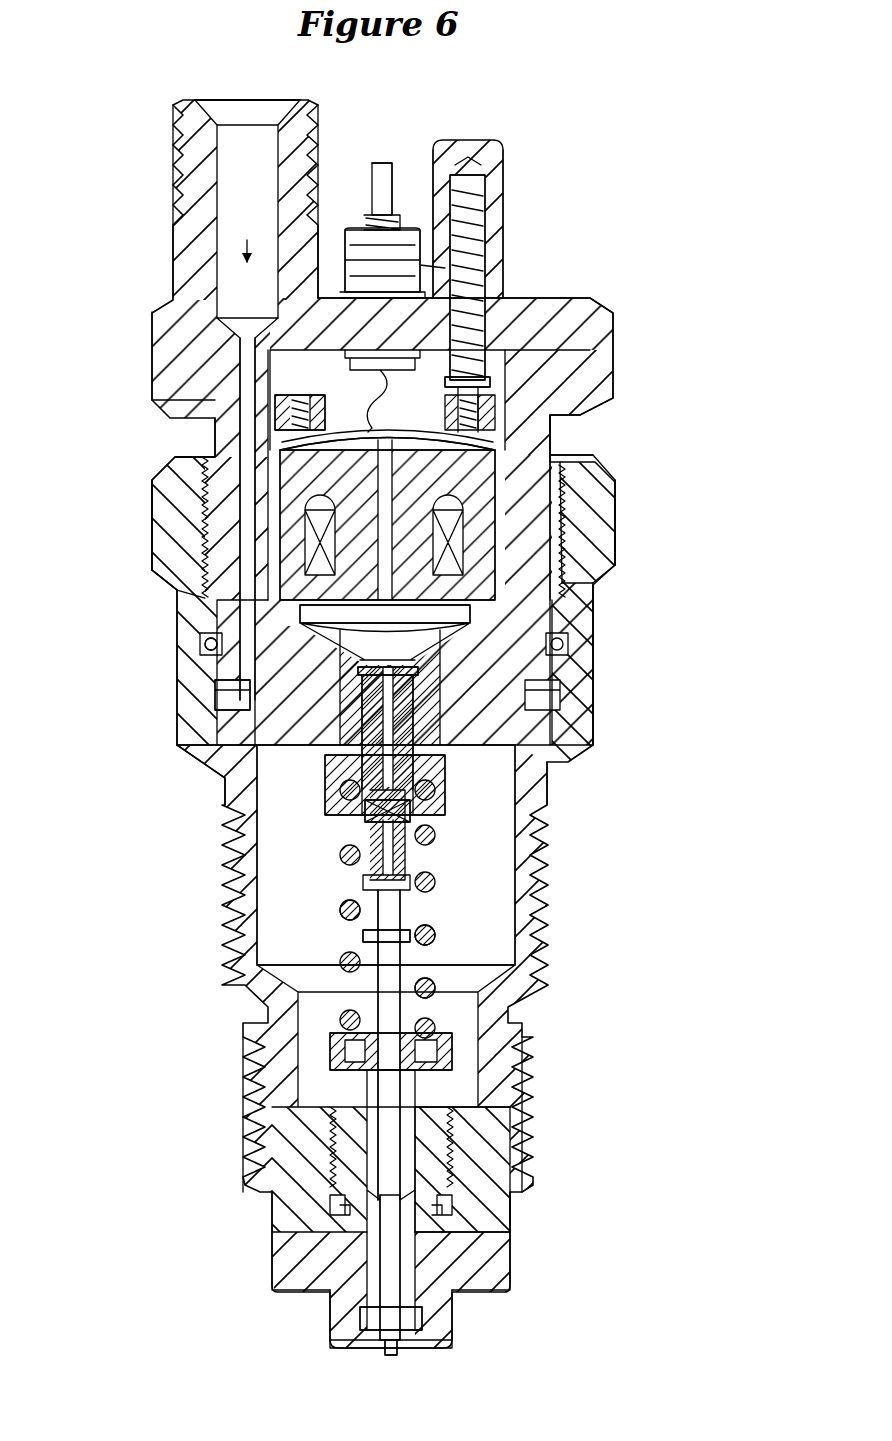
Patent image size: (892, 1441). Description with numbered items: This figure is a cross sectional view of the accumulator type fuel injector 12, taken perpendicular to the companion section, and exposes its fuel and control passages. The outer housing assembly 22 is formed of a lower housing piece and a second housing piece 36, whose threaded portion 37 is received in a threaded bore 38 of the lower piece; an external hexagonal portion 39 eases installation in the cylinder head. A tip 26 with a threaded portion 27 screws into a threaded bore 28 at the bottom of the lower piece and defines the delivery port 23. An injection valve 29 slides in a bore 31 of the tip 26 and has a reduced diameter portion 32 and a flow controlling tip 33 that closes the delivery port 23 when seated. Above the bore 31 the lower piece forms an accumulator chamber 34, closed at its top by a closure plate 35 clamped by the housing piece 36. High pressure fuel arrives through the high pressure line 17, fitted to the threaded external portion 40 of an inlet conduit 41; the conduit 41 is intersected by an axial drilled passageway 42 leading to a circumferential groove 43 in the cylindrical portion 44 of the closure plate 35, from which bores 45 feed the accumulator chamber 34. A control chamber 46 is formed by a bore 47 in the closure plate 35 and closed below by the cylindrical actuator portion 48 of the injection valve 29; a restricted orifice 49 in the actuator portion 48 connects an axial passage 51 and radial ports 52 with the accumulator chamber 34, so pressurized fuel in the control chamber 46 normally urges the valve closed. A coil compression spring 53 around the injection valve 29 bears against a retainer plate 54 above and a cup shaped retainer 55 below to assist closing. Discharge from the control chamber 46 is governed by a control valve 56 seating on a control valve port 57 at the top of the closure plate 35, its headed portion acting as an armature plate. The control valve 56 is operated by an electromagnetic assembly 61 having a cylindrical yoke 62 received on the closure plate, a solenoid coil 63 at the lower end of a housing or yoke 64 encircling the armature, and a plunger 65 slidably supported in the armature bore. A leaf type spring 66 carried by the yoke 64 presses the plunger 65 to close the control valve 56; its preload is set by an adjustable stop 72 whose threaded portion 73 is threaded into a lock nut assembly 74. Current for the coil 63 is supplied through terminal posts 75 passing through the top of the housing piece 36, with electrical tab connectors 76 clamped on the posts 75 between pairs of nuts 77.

The fuel injector 12 is at (690, 685).
The high pressure line 17 is at (247, 92).
The outer housing assembly 22 is at (620, 515).
The delivery port 23 is at (400, 1340).
The tip 26 is at (510, 1262).
The threaded portion 27 is at (500, 1125).
The threaded bore 28 is at (455, 1163).
The injection valve 29 is at (420, 940).
The bore 31 is at (405, 1225).
The reduced diameter portion 32 is at (377, 1247).
The flow controlling tip 33 is at (393, 1352).
The accumulator chamber 34 is at (485, 880).
The closure plate 35 is at (552, 695).
The second housing piece 36 is at (613, 377).
The threaded portion 37 is at (600, 552).
The threaded bore 38 is at (480, 467).
The hexagonal portion 39 is at (617, 497).
The threaded external portion 40 is at (190, 125).
The inlet conduit 41 is at (240, 166).
The drilled passageway 42 is at (240, 362).
The circumferential groove 43 is at (240, 700).
The cylindrical portion 44 is at (290, 712).
The bores 45 is at (290, 745).
The control chamber 46 is at (370, 668).
The bore 47 is at (280, 735).
The actuator portion 48 is at (415, 715).
The restricted orifice 49 is at (375, 652).
The axial passage 51 is at (312, 760).
The radial ports 52 is at (380, 820).
The coil compression spring 53 is at (432, 945).
The retainer plate 54 is at (405, 903).
The cup shaped retainer 55 is at (452, 1053).
The control valve 56 is at (230, 600).
The control valve port 57 is at (490, 626).
The electromagnetic assembly 61 is at (280, 498).
The yoke 62 is at (235, 675).
The solenoid coil 63 is at (300, 550).
The housing or yoke 64 is at (290, 470).
The plunger 65 is at (557, 453).
The leaf type spring 66 is at (555, 352).
The adjustable stop 72 is at (488, 384).
The threaded portion 73 is at (545, 332).
The lock nut assembly 74 is at (505, 280).
The terminal posts 75 is at (388, 215).
The electrical tab connectors 76 is at (478, 272).
The nuts 77 is at (352, 282).